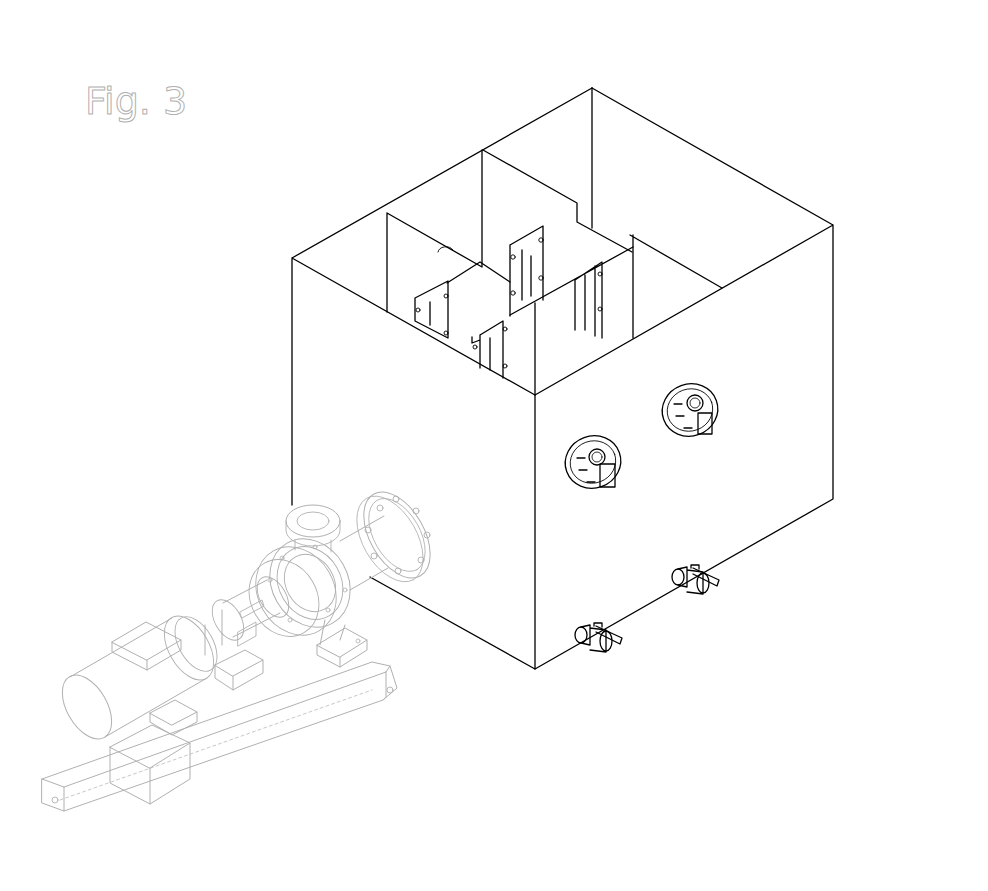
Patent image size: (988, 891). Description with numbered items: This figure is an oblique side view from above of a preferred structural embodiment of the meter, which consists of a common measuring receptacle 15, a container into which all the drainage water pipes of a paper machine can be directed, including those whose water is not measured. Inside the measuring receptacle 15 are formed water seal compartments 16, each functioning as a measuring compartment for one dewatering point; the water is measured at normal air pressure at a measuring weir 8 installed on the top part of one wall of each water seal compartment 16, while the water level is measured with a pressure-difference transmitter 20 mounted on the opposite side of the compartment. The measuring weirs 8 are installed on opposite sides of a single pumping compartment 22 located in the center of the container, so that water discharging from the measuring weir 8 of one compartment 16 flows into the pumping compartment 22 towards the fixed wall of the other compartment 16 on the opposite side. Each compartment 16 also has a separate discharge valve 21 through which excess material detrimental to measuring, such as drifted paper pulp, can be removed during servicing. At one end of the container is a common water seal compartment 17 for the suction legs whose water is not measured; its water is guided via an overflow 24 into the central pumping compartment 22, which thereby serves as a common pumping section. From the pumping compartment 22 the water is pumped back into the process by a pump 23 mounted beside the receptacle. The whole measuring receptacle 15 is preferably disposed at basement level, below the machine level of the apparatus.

The measuring weir 8 is at (518, 245).
The measuring receptacle 15 is at (328, 381).
The water seal compartment 16 is at (455, 200).
The common water seal compartment 17 is at (688, 200).
The pressure-difference transmitter 20 is at (700, 407).
The discharge valve 21 is at (712, 591).
The pumping compartment 22 is at (553, 263).
The pump 23 is at (268, 543).
The overflow 24 is at (608, 230).